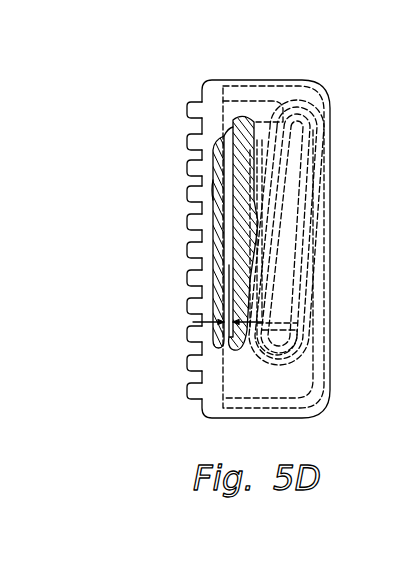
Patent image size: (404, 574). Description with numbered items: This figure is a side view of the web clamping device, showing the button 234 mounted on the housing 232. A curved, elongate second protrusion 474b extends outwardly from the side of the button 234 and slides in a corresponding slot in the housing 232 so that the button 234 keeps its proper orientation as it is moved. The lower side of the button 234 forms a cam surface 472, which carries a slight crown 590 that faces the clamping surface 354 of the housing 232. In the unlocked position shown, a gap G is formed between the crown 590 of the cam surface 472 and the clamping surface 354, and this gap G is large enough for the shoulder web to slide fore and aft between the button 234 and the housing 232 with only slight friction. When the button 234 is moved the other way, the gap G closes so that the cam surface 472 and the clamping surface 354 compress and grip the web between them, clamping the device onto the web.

The housing 232 is at (330, 323).
The button 234 is at (239, 117).
The clamping surface 354 is at (226, 195).
The cam surface 472 is at (221, 141).
The second protrusion 474b is at (288, 190).
The crown 590 is at (230, 258).
The gap G is at (195, 326).